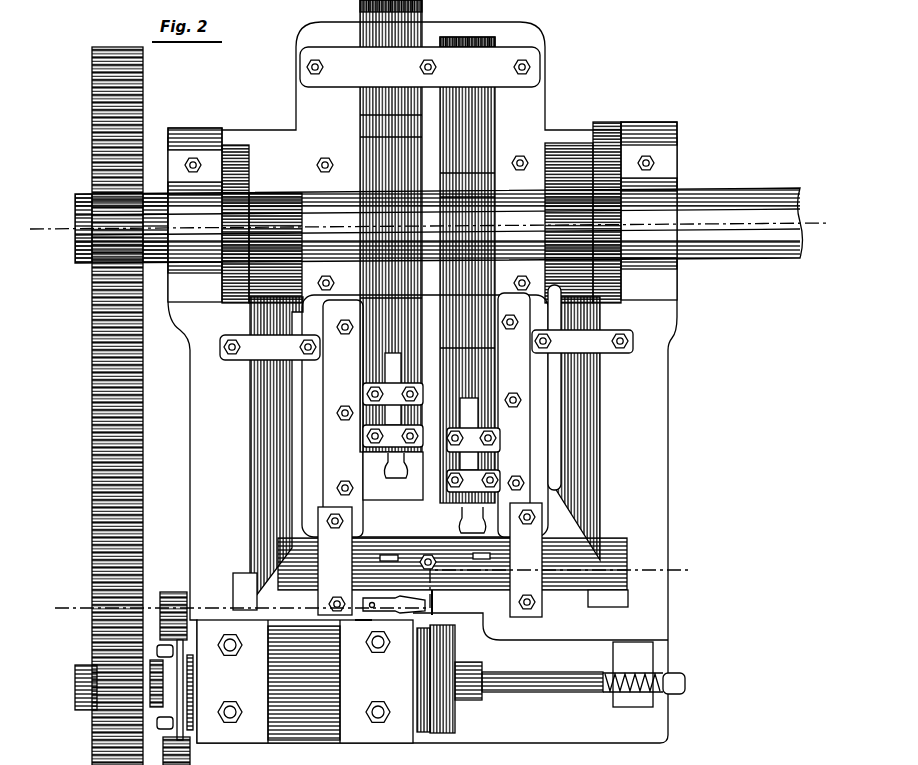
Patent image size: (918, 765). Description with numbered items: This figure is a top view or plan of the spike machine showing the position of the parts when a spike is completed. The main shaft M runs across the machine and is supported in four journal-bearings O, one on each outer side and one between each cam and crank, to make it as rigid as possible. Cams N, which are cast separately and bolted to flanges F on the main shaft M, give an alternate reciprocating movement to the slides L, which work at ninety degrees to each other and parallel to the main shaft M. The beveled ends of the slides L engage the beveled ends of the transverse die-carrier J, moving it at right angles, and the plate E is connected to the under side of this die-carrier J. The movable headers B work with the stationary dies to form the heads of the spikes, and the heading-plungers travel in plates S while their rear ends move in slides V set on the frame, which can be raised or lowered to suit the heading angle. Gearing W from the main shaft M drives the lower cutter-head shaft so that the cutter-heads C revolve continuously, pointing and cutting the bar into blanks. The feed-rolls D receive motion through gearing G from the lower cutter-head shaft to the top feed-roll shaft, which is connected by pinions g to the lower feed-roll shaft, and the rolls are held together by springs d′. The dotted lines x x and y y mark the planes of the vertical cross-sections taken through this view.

The gearing W is at (94, 643).
The main shaft M is at (74, 238).
The section line y y is at (430, 227).
The journal-bearings O is at (422, 212).
The flanges F is at (244, 192).
The collar F′ is at (607, 212).
The cams N is at (421, 223).
The slides V is at (420, 67).
The plate E is at (430, 251).
The plates S is at (426, 415).
The slides L is at (278, 426).
The movable headers B is at (466, 520).
The transverse die-carrier J is at (596, 554).
The section line x x is at (370, 590).
The feed-rolls D is at (406, 602).
The pinions g is at (173, 605).
The gearing G is at (178, 688).
The gear box C′ is at (305, 681).
The springs d′ is at (365, 622).
The cutter-heads C is at (551, 679).